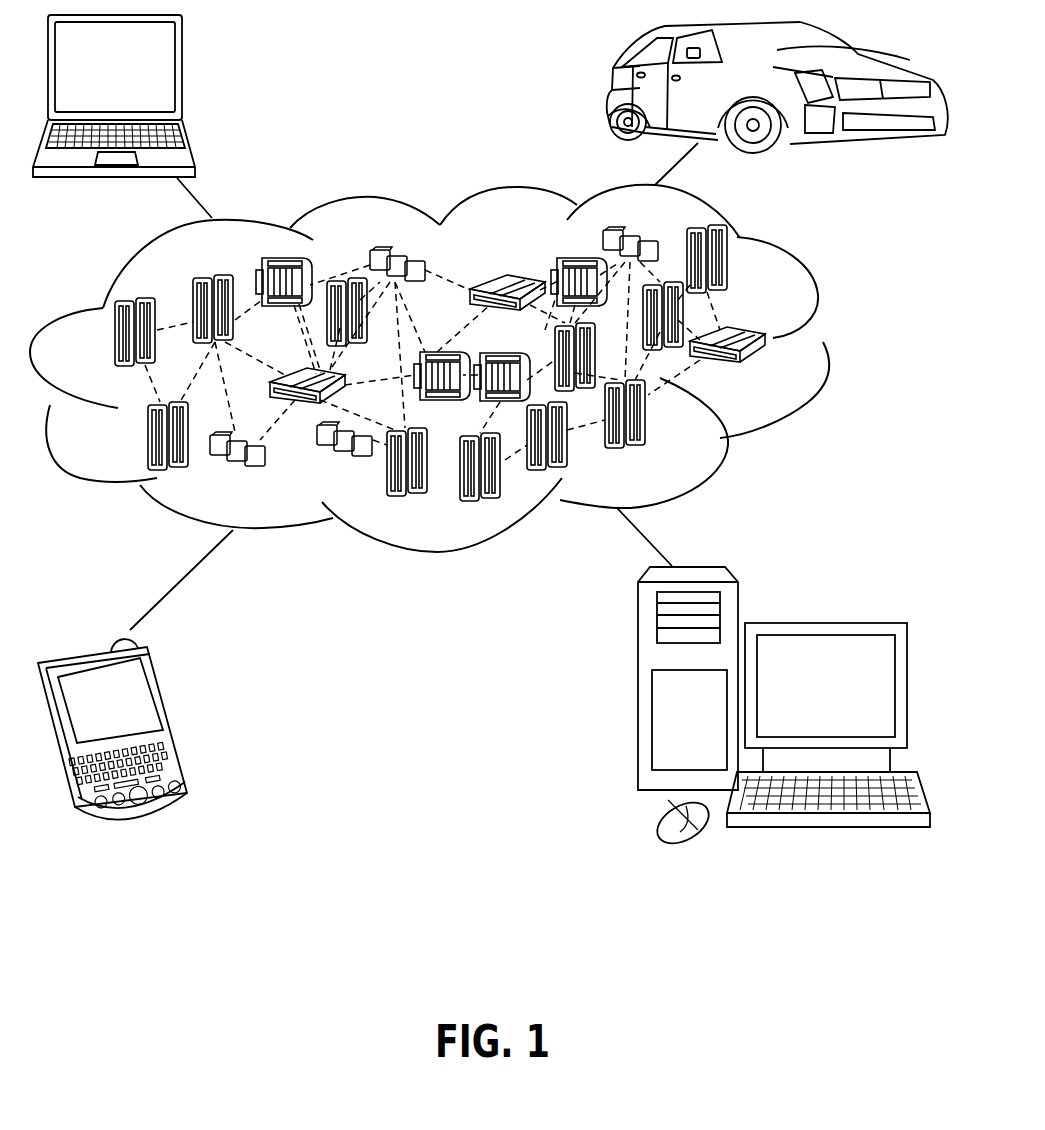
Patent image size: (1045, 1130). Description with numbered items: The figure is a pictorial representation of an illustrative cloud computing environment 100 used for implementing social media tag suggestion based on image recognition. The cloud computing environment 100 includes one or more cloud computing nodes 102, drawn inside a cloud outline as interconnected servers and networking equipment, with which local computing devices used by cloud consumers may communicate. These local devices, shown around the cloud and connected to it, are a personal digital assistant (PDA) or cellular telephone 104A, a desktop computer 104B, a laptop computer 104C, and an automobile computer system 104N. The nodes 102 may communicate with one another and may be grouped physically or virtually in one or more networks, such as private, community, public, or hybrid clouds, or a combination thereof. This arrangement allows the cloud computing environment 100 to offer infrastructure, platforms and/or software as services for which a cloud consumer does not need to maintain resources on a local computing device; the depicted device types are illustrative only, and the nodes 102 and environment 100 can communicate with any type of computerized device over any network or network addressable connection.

The cloud computing environment 100 is at (823, 343).
The cloud computing nodes 102 is at (766, 372).
The personal digital assistant (PDA) or cellular telephone 104A is at (172, 715).
The desktop computer 104B is at (822, 623).
The laptop computer 104C is at (183, 75).
The automobile computer system 104N is at (608, 88).